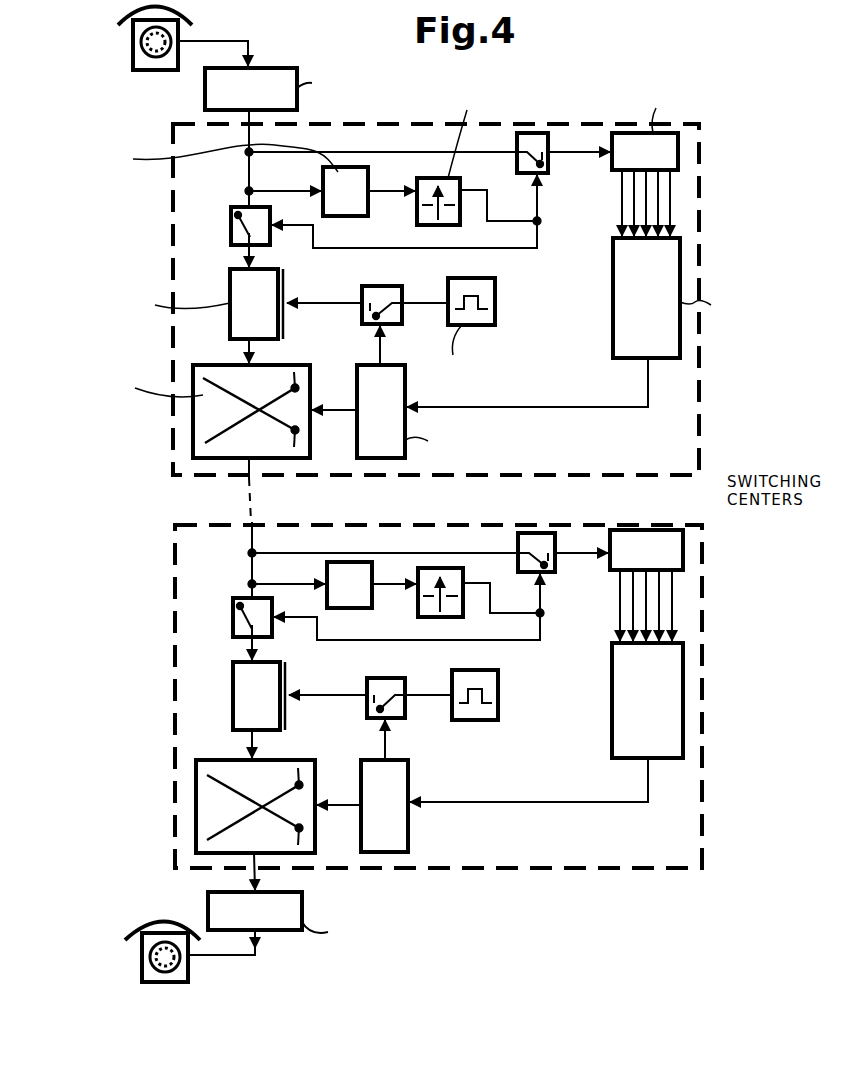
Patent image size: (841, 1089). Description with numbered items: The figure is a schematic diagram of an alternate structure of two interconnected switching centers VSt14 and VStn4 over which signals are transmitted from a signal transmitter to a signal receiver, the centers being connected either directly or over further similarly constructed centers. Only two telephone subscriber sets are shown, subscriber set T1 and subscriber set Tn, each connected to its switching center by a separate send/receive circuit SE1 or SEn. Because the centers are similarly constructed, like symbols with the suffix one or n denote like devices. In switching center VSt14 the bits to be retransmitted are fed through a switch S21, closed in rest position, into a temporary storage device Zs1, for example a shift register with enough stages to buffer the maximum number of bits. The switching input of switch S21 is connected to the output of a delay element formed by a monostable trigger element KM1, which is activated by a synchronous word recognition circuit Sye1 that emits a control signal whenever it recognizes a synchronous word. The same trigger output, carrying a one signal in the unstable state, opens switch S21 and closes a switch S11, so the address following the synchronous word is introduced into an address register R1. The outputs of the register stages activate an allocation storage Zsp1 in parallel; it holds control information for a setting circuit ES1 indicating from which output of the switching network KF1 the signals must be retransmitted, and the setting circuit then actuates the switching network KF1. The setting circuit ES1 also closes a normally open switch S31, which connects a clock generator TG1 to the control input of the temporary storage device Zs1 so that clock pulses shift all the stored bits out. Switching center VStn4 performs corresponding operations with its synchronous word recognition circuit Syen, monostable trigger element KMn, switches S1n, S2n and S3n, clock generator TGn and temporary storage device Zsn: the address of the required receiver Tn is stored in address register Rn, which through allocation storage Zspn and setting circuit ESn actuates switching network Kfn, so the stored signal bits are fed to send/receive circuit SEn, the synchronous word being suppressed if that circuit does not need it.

The telephone subscriber set T1 is at (177, 39).
The send/receive circuit SE1 is at (321, 110).
The synchronous word recognition circuit Sye1 is at (324, 183).
The monostable trigger element KM1 is at (420, 228).
The switch S11 is at (548, 166).
The address register R1 is at (659, 152).
The switch S21 is at (233, 230).
The temporary storage device Zs1 is at (179, 292).
The switch S31 is at (366, 290).
The clock generator TG1 is at (501, 305).
The allocation storage Zsp1 is at (612, 322).
The switching network KF1 is at (222, 364).
The setting circuit ES1 is at (406, 412).
The switching center VSt14 is at (633, 465).
The synchronous word recognition circuit Syen is at (328, 576).
The monostable trigger element KMn is at (421, 620).
The switch S1n is at (555, 566).
The address register Rn is at (646, 585).
The switch S2n is at (366, 619).
The temporary storage device Zsn is at (259, 683).
The switch S3n is at (369, 681).
The clock generator TGn is at (504, 700).
The allocation storage Zspn is at (546, 722).
The switching network Kfn is at (238, 758).
The setting circuit ESn is at (362, 806).
The switching center VStn4 is at (657, 857).
The send/receive circuit SEn is at (330, 902).
The telephone subscriber set Tn is at (181, 952).